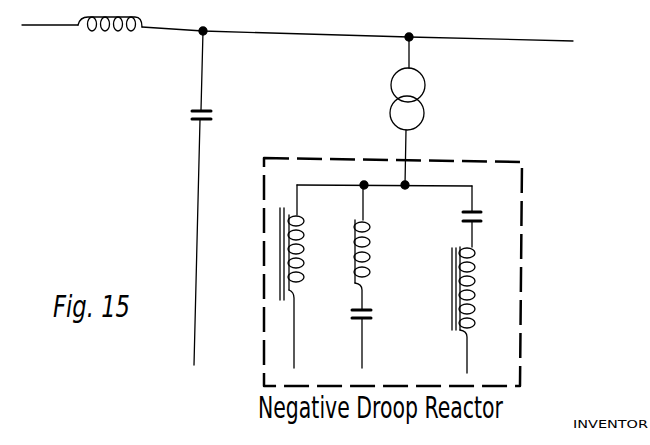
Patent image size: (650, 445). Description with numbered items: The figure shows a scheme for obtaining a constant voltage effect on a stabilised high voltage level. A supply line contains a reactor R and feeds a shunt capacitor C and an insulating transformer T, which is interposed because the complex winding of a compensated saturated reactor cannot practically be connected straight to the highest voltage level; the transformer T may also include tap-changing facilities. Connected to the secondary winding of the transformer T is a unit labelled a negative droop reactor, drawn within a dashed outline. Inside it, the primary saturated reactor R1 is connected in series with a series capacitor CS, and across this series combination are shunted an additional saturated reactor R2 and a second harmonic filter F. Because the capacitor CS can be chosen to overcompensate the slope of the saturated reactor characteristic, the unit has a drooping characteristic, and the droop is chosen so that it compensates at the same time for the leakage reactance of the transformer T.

The reactor R is at (110, 38).
The capacitor C is at (211, 198).
The insulating transformer T is at (418, 111).
The additional saturated reactor R2 is at (306, 276).
The second harmonic filter F is at (370, 276).
The series capacitor CS is at (486, 216).
The primary saturated reactor R1 is at (480, 310).